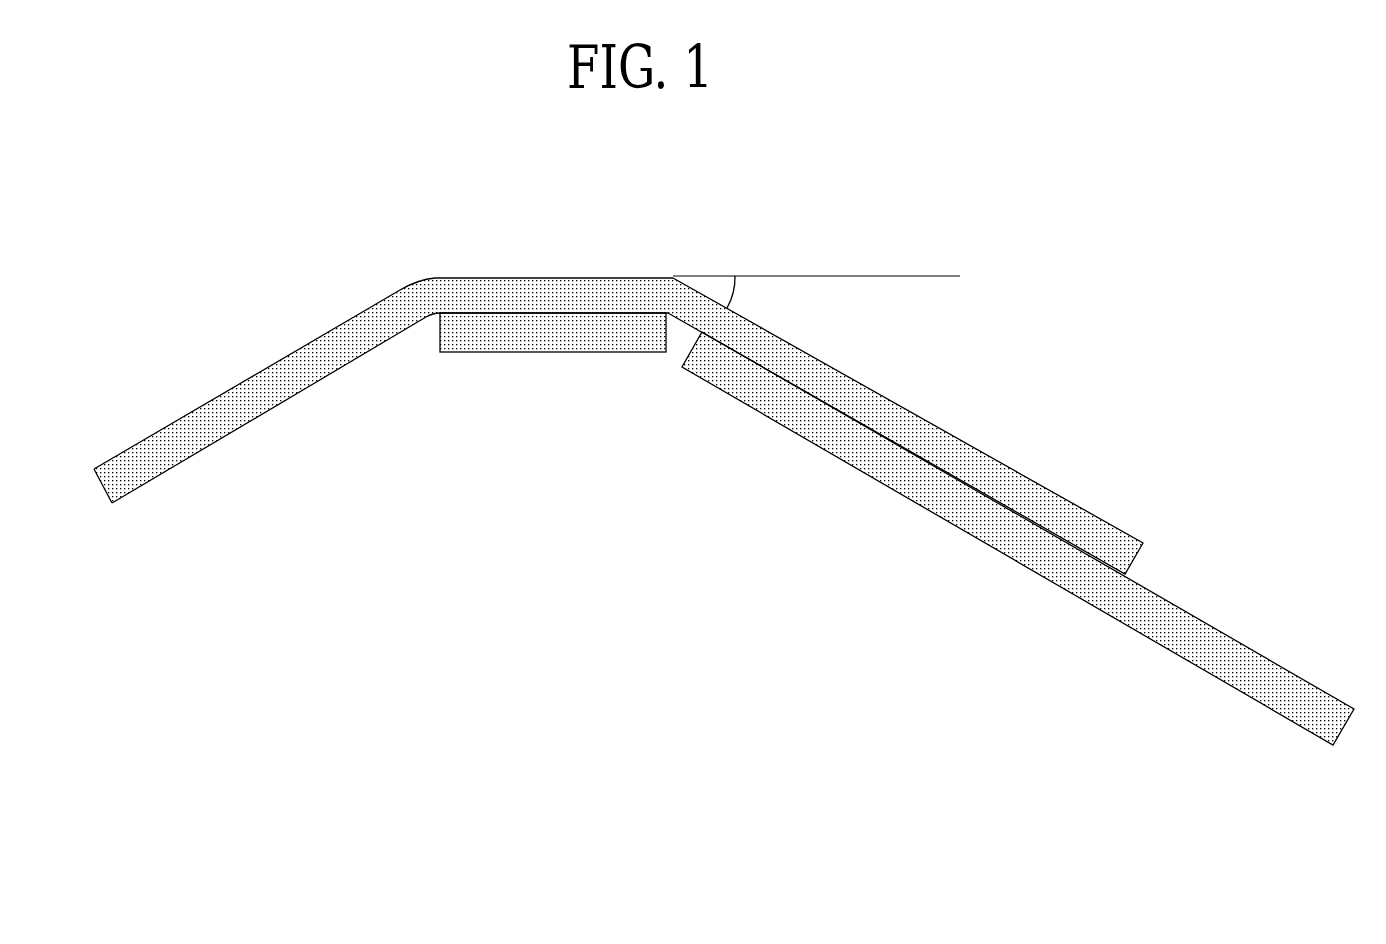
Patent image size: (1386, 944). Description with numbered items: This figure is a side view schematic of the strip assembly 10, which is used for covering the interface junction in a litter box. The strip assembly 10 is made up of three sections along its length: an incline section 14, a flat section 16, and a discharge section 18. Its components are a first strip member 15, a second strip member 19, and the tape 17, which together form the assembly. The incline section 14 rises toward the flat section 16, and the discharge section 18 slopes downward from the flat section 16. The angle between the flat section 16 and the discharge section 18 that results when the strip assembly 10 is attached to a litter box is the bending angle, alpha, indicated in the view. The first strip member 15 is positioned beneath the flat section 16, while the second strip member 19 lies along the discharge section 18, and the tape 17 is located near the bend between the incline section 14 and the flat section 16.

The strip assembly 10 is at (318, 195).
The incline section 14 is at (298, 355).
The first strip member 15 is at (577, 333).
The flat section 16 is at (608, 285).
The tape 17 is at (409, 322).
The discharge section 18 is at (923, 442).
The second strip member 19 is at (762, 397).